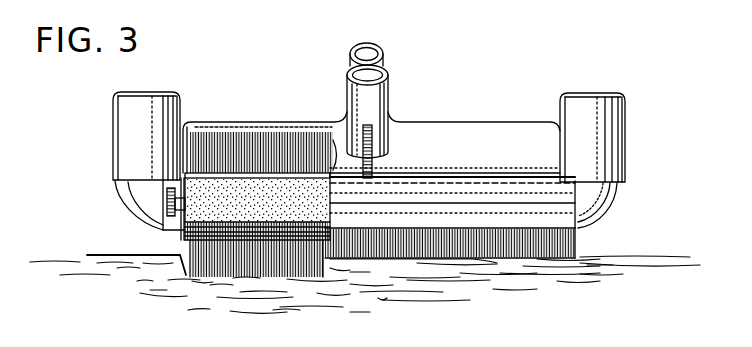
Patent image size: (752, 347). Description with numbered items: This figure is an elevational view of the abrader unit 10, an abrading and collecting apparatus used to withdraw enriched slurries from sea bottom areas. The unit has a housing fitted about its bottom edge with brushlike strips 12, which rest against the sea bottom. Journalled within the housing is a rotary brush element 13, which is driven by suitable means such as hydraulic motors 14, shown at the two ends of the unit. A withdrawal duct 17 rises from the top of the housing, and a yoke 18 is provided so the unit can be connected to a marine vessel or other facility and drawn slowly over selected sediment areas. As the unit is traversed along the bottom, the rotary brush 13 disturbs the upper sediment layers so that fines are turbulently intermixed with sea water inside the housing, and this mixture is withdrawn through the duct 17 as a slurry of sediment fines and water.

The abrader unit 10 is at (443, 120).
The brushlike strips 12 is at (562, 244).
The rotary brush element 13 is at (281, 155).
The hydraulic motors 14 is at (132, 123).
The withdrawal duct 17 is at (383, 56).
The yoke 18 is at (347, 78).